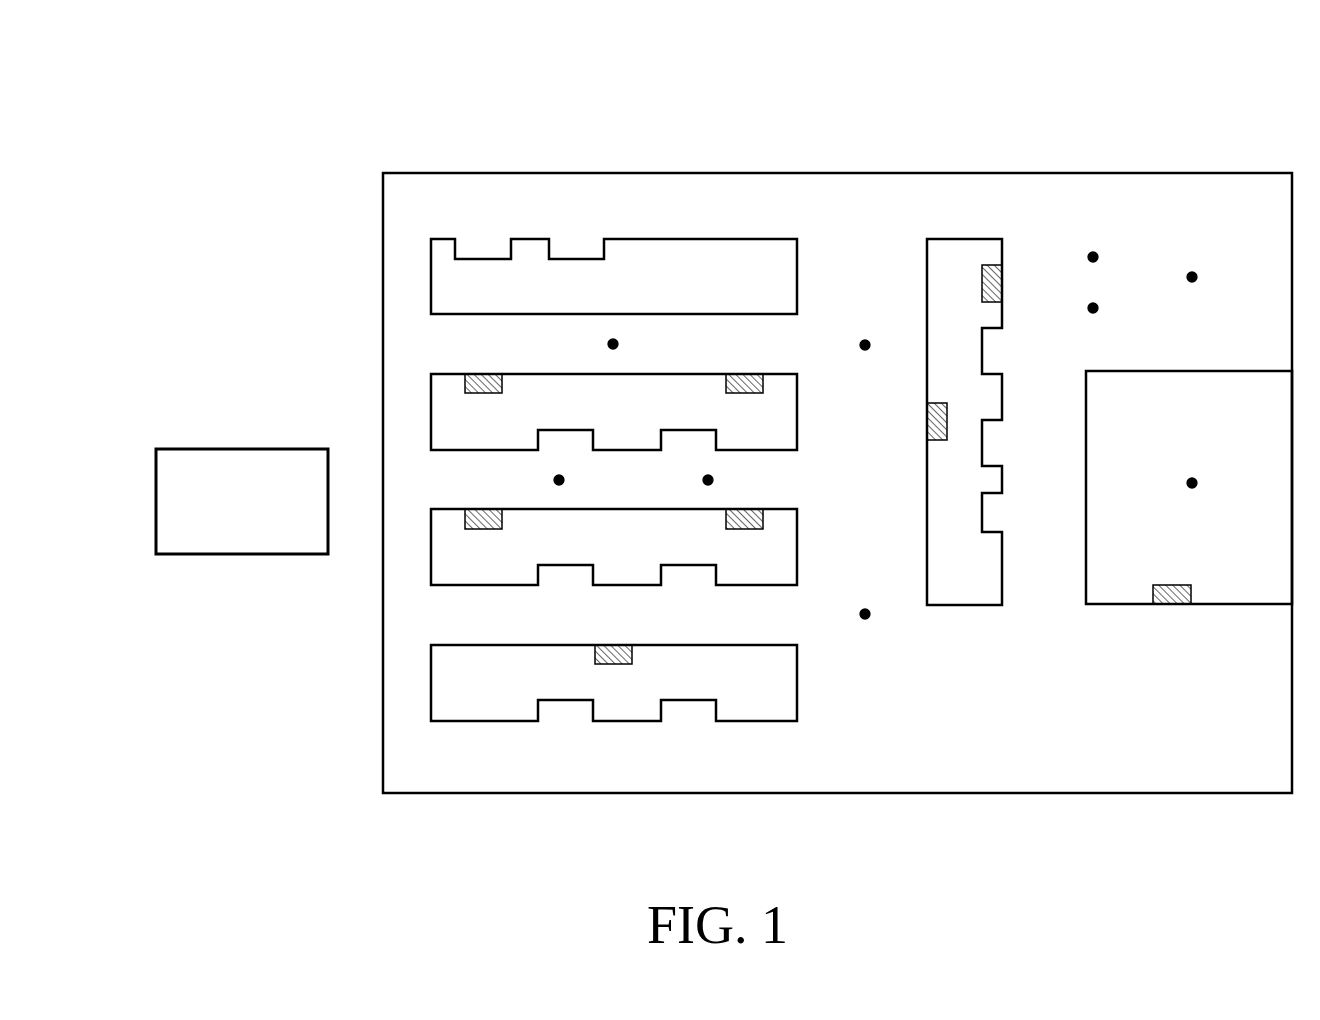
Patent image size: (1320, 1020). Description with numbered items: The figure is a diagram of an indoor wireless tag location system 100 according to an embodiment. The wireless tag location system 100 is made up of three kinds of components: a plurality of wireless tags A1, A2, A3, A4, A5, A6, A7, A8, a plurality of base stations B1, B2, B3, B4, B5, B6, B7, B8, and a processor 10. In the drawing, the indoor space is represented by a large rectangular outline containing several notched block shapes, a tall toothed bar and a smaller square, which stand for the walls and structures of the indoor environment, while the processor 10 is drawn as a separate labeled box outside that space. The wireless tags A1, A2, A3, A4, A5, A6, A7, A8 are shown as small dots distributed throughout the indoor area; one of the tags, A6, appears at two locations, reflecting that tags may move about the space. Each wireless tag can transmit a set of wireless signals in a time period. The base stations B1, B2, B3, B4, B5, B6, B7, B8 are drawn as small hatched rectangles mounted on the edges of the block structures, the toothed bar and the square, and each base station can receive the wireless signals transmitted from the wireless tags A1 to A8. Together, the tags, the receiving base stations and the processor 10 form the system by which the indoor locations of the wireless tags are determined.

The wireless tag location system 100 is at (246, 136).
The processor 10 is at (244, 449).
The wireless tag A1 is at (733, 482).
The wireless tag A2 is at (865, 326).
The wireless tag A3 is at (536, 482).
The wireless tag A4 is at (637, 347).
The wireless tag A5 is at (865, 596).
The wireless tag A6 is at (1144, 372).
The wireless tag A7 is at (1095, 326).
The wireless tag A8 is at (1193, 295).
The base station B1 is at (746, 537).
The base station B2 is at (484, 537).
The base station B3 is at (746, 401).
The base station B4 is at (484, 402).
The base station B5 is at (1171, 576).
The base station B6 is at (973, 284).
The base station B7 is at (949, 404).
The base station B8 is at (614, 673).